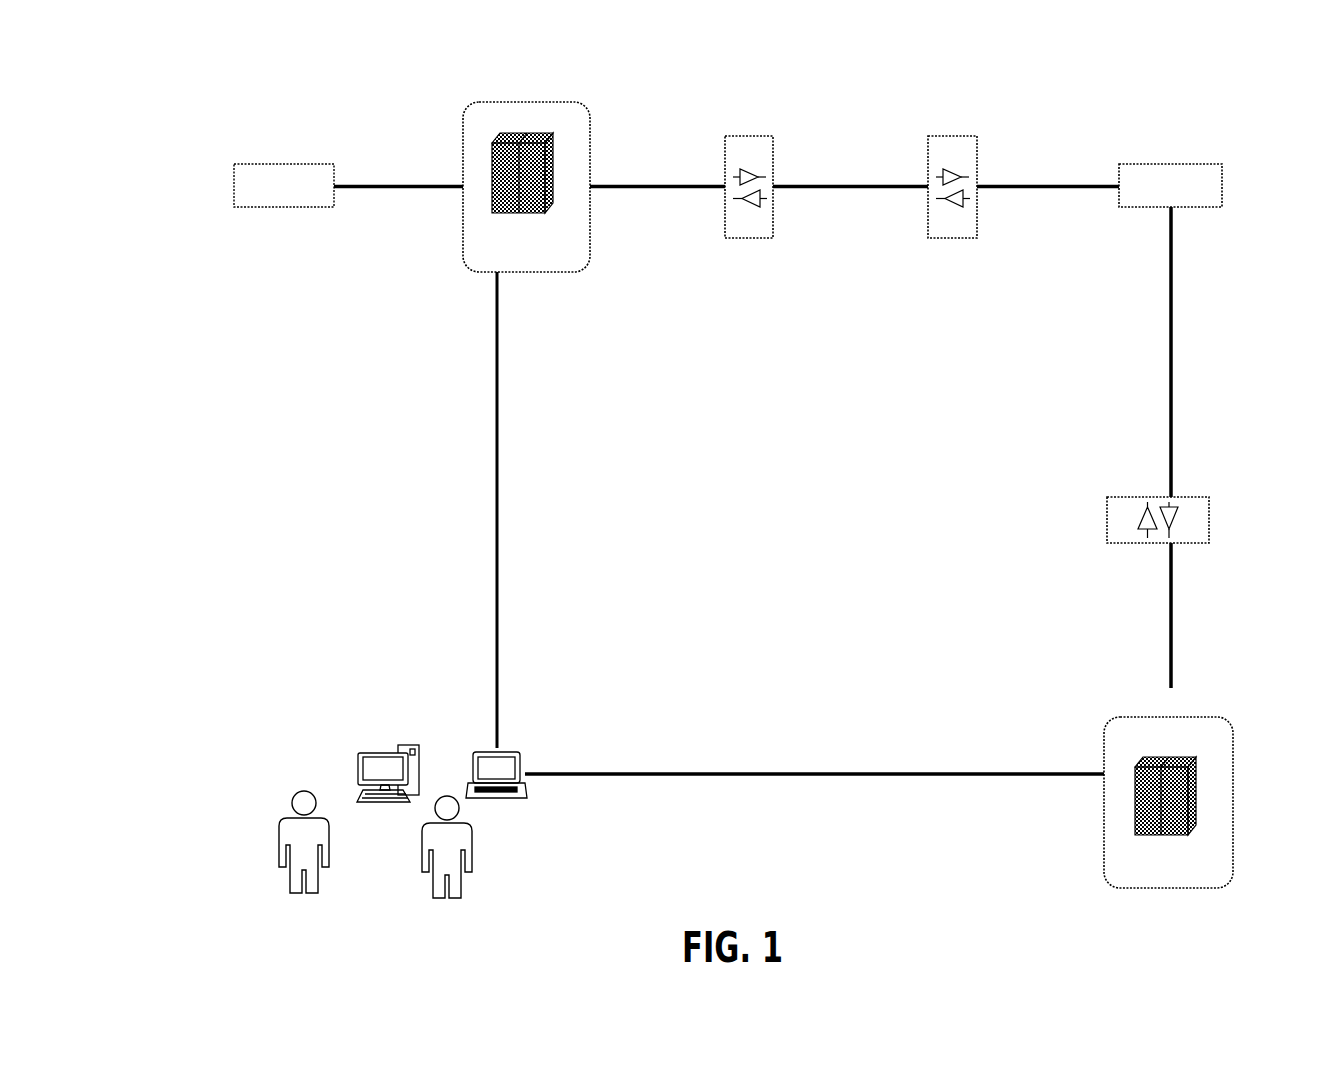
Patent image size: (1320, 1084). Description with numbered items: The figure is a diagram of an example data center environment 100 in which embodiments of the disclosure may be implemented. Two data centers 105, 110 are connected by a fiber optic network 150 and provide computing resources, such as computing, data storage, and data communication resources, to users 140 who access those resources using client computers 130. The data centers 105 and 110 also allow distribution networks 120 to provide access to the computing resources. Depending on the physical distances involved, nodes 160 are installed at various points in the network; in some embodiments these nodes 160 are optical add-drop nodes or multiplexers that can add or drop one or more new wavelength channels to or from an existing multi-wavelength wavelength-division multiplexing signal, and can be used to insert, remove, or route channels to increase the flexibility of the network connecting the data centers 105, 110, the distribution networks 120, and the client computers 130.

The environment 100 is at (352, 90).
The data center 105 is at (528, 175).
The data center 110 is at (1171, 790).
The distribution network 120 is at (235, 163).
The client computer 130 is at (360, 771).
The user 140 is at (290, 815).
The fiber optic network 150 is at (494, 499).
The node 160 is at (747, 133).